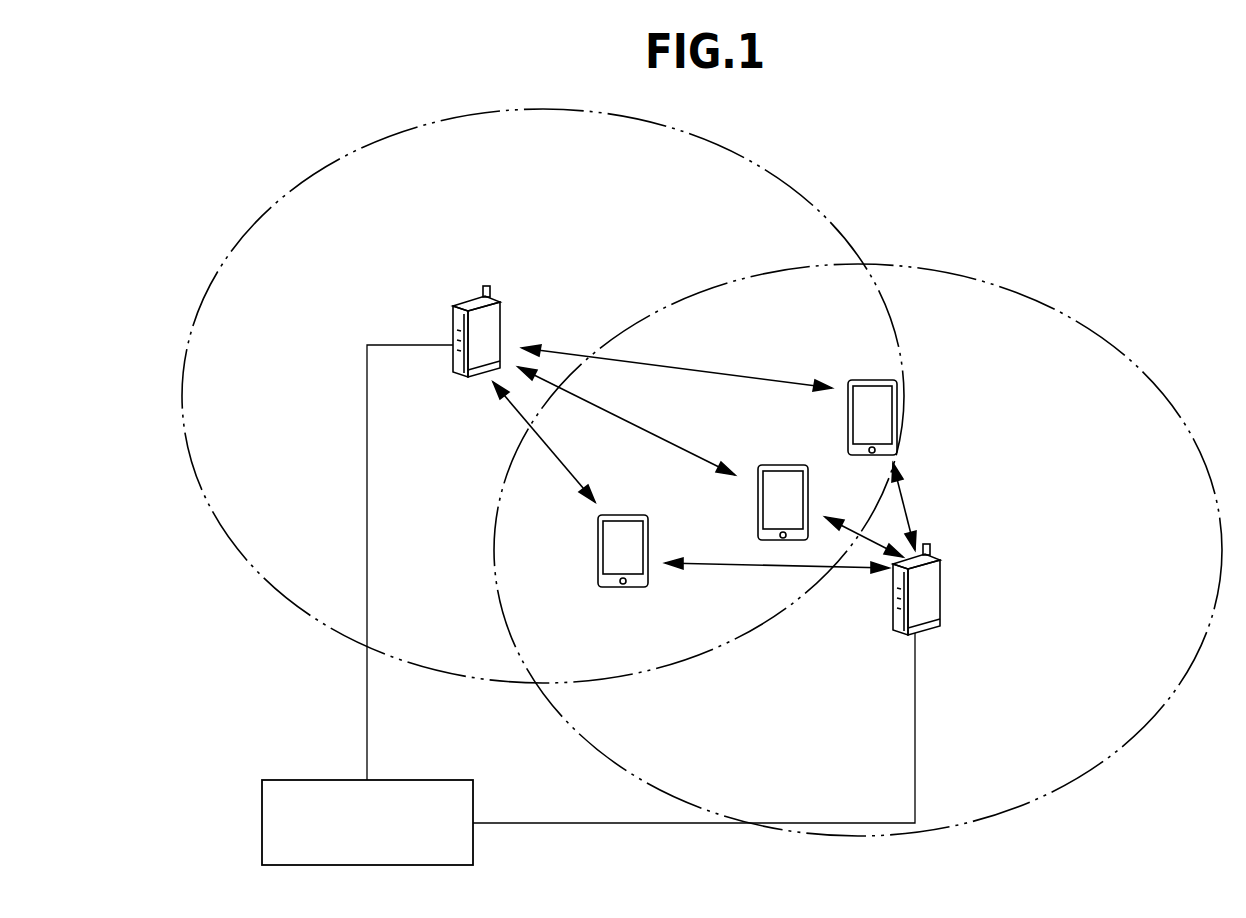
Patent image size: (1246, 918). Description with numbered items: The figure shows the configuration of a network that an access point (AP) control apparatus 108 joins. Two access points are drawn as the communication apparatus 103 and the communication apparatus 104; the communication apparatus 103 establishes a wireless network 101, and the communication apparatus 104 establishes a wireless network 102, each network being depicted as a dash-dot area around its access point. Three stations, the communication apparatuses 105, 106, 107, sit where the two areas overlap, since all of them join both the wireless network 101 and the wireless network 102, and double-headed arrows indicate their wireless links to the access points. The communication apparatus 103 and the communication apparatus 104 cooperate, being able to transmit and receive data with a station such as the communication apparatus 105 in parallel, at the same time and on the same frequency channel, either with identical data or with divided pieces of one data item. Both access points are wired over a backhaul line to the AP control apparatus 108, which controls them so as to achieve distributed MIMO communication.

The wireless network 101 is at (1092, 772).
The wireless network 102 is at (297, 612).
The communication apparatus 103 is at (942, 600).
The communication apparatus 104 is at (501, 316).
The communication apparatus 105 is at (608, 588).
The communication apparatus 106 is at (781, 465).
The communication apparatus 107 is at (897, 413).
The AP control apparatus 108 is at (432, 780).